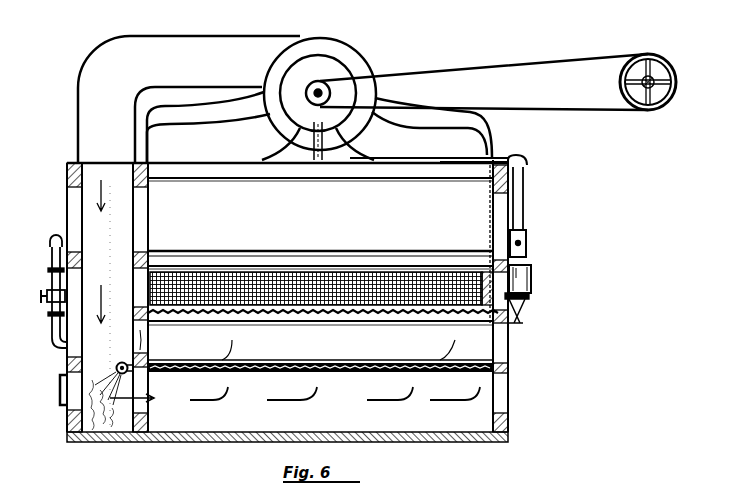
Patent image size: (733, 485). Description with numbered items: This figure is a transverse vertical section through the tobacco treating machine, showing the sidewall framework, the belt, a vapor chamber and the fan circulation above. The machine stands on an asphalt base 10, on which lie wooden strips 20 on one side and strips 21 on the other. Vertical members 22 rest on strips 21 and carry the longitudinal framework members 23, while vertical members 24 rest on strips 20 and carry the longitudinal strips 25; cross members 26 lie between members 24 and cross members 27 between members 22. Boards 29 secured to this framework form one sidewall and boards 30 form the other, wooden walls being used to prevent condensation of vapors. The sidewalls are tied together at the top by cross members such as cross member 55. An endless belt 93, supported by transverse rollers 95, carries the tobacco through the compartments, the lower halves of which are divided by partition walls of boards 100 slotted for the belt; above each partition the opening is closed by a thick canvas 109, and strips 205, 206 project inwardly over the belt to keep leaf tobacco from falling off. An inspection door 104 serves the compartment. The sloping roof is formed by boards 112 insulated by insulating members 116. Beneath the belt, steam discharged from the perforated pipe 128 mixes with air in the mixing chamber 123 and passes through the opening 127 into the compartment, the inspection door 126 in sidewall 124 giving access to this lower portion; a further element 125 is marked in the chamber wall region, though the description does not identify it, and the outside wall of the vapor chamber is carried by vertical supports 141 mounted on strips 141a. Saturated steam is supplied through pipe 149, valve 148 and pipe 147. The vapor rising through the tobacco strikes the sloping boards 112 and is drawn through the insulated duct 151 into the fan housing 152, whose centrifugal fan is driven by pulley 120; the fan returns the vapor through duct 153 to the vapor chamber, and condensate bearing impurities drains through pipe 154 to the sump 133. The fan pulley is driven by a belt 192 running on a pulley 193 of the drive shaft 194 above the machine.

The asphalt base 10 is at (455, 440).
The longitudinally disposed strips 20 is at (510, 430).
The longitudinally disposed strips 21 is at (133, 418).
The vertically disposed wooden members 22 is at (133, 199).
The longitudinally disposed framework members 23 is at (148, 190).
The vertically disposed members 24 is at (508, 218).
The longitudinally disposed strips 25 is at (493, 187).
The cross members 26 is at (508, 360).
The cross members 27 is at (148, 343).
The boards 29 is at (493, 222).
The boards 30 is at (148, 238).
The cross member 55 is at (300, 179).
The endless belt 93 is at (222, 326).
The rollers 95 is at (270, 326).
The boards 100 is at (320, 381).
The inspection door 104 is at (511, 395).
The canvas 109 is at (360, 318).
The board 112 is at (355, 243).
The insulating members 116 is at (408, 243).
The pulley 120 is at (318, 82).
The mixing chamber 123 is at (109, 268).
The sidewall 124 is at (99, 308).
The air flow 125 is at (140, 216).
The inspection door 126 is at (60, 390).
The opening 127 is at (150, 404).
The perforated pipe 128 is at (120, 362).
The sump 133 is at (531, 282).
The vertically disposed supports 141 is at (67, 203).
The strips 141a is at (67, 424).
The pipe 147 is at (52, 324).
The valve 148 is at (41, 297).
The pipe 149 is at (50, 268).
The insulated duct 151 is at (331, 126).
The fan housing 152 is at (332, 36).
The duct 153 is at (189, 99).
The pipe 154 is at (523, 205).
The belts 192 is at (548, 48).
The pulleys 193 is at (642, 82).
The drive shaft 194 is at (676, 72).
The strips 205 is at (466, 322).
The strips 206 is at (133, 296).